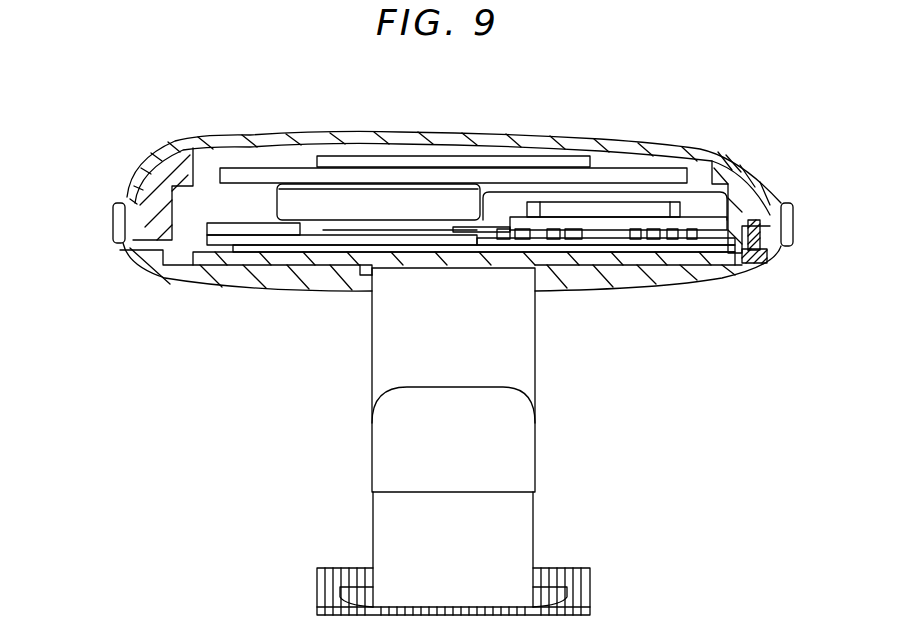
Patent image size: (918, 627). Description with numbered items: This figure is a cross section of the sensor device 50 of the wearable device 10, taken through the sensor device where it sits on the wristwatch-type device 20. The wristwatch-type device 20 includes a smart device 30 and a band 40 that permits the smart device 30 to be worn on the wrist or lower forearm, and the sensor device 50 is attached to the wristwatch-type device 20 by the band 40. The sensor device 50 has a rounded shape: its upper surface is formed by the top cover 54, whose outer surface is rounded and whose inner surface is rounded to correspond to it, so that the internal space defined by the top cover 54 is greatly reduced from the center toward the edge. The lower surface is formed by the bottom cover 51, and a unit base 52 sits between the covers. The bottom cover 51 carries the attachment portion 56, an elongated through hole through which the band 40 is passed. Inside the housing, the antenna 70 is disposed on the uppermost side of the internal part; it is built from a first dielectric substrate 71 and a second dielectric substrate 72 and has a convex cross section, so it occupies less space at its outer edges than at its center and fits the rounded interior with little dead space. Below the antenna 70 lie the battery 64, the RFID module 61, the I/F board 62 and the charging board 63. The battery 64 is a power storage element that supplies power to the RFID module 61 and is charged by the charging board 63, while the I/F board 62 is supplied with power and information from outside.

The wearable device 10 is at (146, 396).
The wristwatch-type device 20 is at (648, 493).
The smart device 30 is at (578, 582).
The band 40 is at (522, 520).
The sensor device 50 is at (759, 121).
The bottom cover 51 is at (320, 283).
The unit base 52 is at (597, 257).
The top cover 54 is at (232, 138).
The attachment portion 56 is at (365, 272).
The RFID module 61 is at (692, 202).
The I/F board 62 is at (308, 232).
The charging board 63 is at (678, 240).
The battery 64 is at (345, 198).
The antenna 70 is at (397, 150).
The first dielectric substrate 71 is at (617, 177).
The second dielectric substrate 72 is at (485, 160).